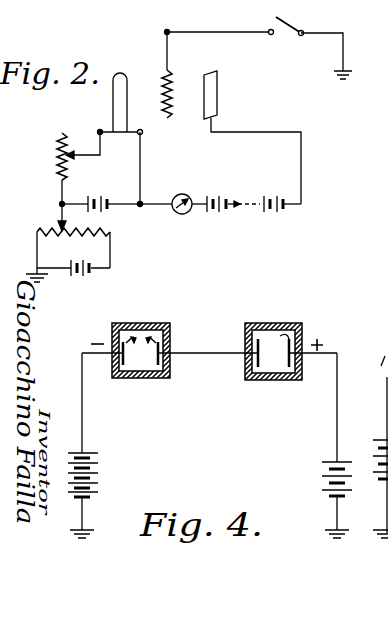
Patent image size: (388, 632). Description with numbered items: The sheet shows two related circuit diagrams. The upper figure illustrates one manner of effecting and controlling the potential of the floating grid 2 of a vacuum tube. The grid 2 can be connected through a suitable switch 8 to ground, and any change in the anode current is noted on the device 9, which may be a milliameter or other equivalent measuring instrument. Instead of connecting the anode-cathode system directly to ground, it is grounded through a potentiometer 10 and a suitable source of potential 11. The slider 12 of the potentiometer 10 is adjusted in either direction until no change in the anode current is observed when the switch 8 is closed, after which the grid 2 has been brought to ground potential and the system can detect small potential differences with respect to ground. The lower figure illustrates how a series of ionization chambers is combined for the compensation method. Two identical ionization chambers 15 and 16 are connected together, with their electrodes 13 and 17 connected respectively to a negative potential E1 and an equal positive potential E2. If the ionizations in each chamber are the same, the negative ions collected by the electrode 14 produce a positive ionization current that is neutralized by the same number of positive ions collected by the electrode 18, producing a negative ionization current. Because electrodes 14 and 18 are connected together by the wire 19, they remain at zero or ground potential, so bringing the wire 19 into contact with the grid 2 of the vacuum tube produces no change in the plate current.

In FIG. 2, the grid 2 is at (175, 86).
In FIG. 2, the switch 8 is at (272, 22).
In FIG. 2, the measuring instrument 9 is at (187, 196).
In FIG. 2, the potentiometer 10 is at (101, 246).
In FIG. 2, the source of potential 11 is at (100, 192).
In FIG. 2, the slider 12 is at (57, 219).
In FIG. 4, the electrode 13 is at (112, 336).
In FIG. 4, the electrode 14 is at (168, 331).
In FIG. 4, the ionization chamber 15 is at (150, 316).
In FIG. 4, the ionization chamber 16 is at (276, 322).
In FIG. 4, the electrode 17 is at (279, 322).
In FIG. 4, the electrode 18 is at (262, 345).
In FIG. 4, the wire 19 is at (210, 356).
In FIG. 4, the negative potential E1 is at (123, 428).
In FIG. 4, the positive potential E2 is at (323, 478).